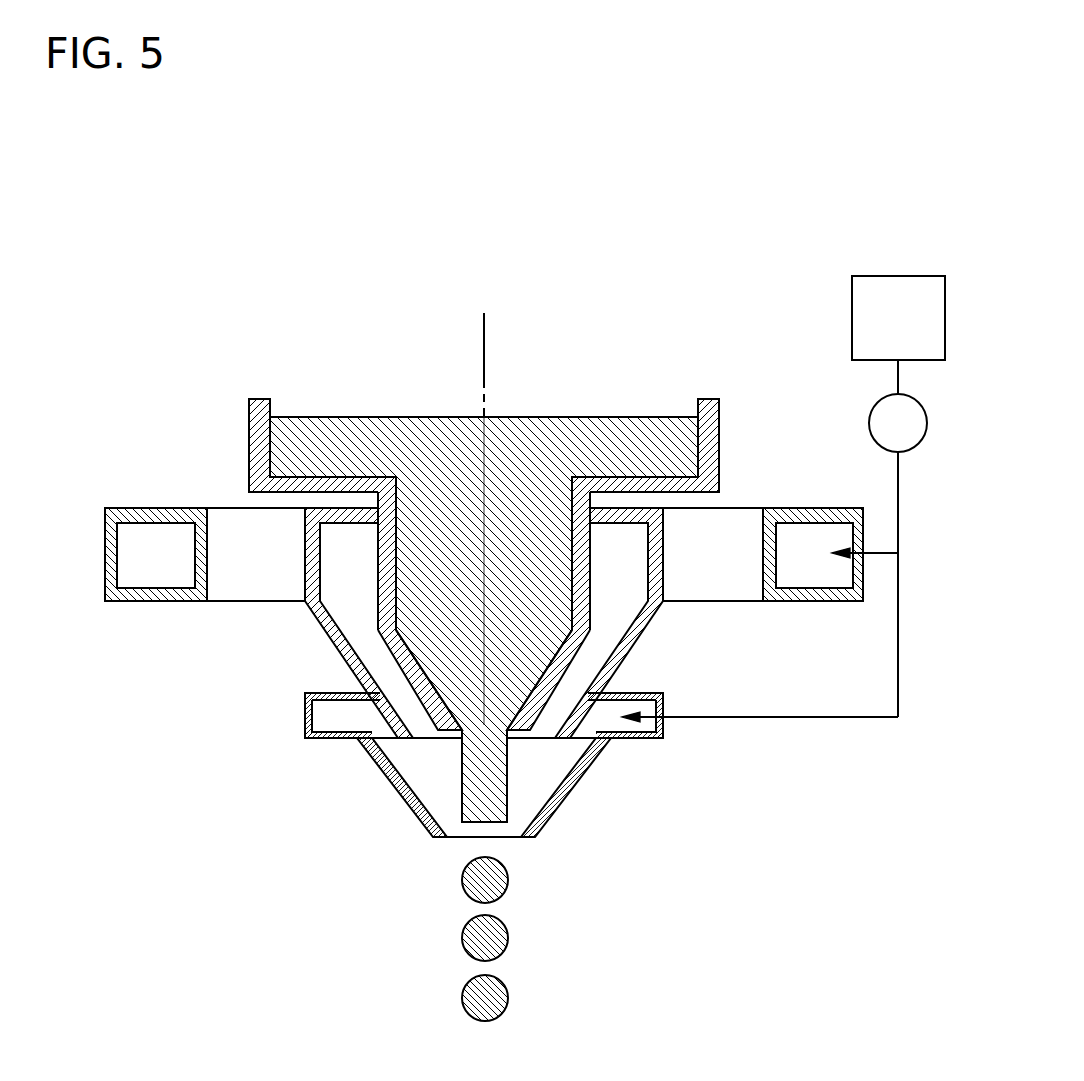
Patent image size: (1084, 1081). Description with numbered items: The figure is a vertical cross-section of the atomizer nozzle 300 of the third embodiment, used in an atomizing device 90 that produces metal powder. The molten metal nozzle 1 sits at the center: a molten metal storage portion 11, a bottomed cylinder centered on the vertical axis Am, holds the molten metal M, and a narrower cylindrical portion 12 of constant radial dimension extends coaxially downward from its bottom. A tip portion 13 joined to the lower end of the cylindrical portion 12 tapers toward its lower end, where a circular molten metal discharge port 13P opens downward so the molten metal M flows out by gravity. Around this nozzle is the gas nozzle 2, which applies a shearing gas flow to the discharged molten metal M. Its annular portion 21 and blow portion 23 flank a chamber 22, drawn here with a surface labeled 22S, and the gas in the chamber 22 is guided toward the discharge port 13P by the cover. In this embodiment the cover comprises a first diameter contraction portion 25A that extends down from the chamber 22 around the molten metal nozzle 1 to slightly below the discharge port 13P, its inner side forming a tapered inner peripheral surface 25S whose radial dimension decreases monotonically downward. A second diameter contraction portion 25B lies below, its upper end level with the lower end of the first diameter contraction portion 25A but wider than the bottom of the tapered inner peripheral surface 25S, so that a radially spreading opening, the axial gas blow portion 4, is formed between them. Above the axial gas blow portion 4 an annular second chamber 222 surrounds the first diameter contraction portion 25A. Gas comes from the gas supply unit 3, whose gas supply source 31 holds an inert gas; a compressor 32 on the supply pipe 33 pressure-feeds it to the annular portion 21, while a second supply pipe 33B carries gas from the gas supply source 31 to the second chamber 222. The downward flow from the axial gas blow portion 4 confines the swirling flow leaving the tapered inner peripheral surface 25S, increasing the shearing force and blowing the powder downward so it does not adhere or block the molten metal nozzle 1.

The atomizing device 90 is at (126, 245).
The atomizer nozzle 300 is at (350, 330).
The molten metal nozzle 1 is at (601, 312).
The molten metal storage portion 11 is at (262, 397).
The cylindrical portion 12 is at (385, 548).
The tip portion 13 is at (440, 688).
The molten metal discharge port 13P is at (468, 726).
The molten metal M is at (553, 417).
The axis Am is at (484, 313).
The gas nozzle 2 is at (783, 869).
The annular portion 21 is at (825, 601).
The chamber 22 is at (663, 568).
The inner surface of gas guide member 22S is at (323, 572).
The second chamber 222 is at (620, 738).
The blow portion 23 is at (238, 598).
The first diameter contraction portion 25A is at (623, 662).
The second diameter contraction portion 25B is at (570, 790).
The tapered inner peripheral surface 25S is at (372, 740).
The axial gas blow portion 4 is at (600, 737).
The gas supply unit 3 is at (792, 250).
The gas supply source 31 is at (898, 275).
The compressor 32 is at (872, 410).
The supply pipe 33 is at (900, 525).
The second supply pipe 33B is at (898, 683).